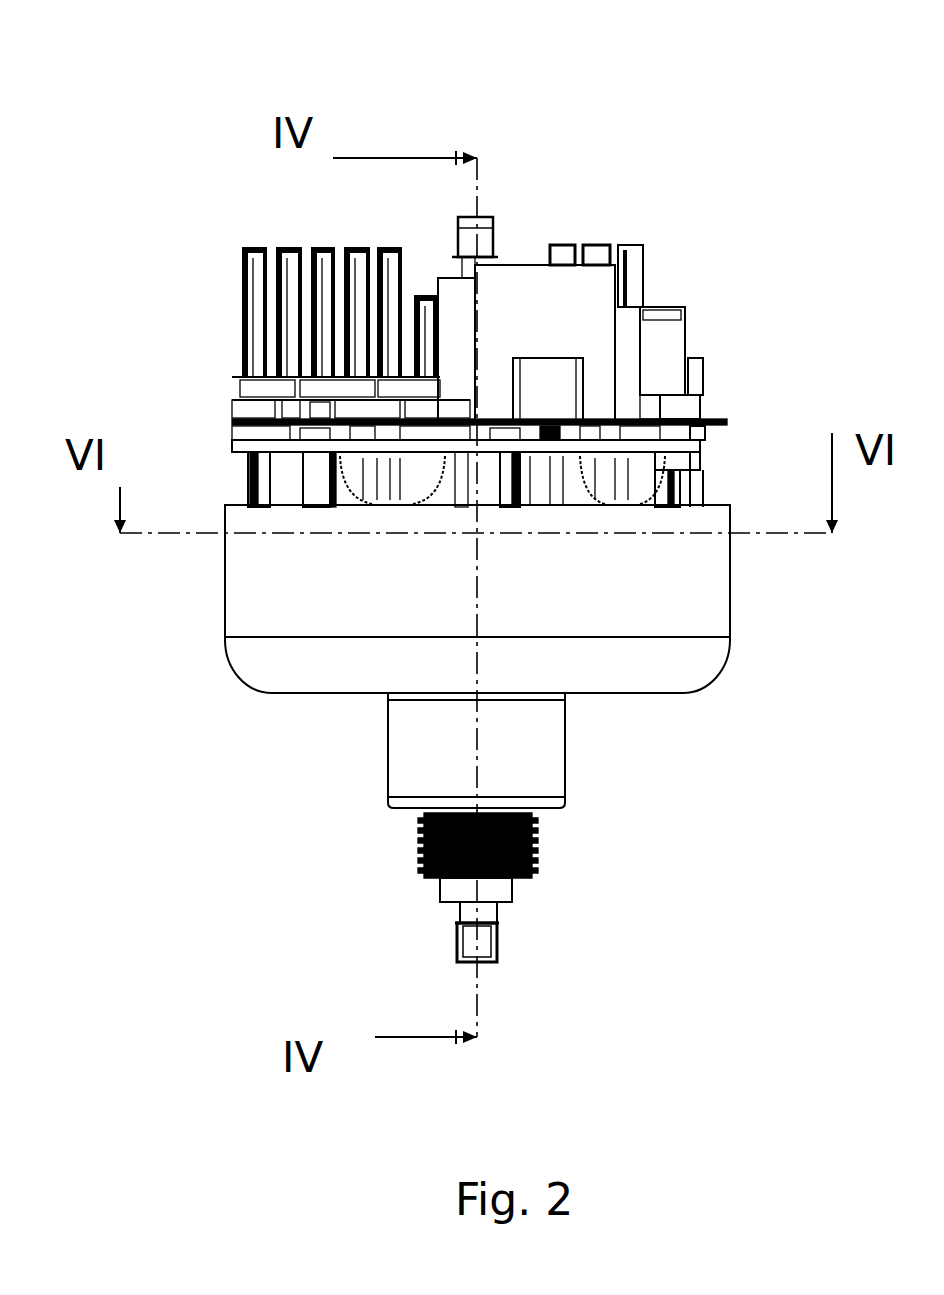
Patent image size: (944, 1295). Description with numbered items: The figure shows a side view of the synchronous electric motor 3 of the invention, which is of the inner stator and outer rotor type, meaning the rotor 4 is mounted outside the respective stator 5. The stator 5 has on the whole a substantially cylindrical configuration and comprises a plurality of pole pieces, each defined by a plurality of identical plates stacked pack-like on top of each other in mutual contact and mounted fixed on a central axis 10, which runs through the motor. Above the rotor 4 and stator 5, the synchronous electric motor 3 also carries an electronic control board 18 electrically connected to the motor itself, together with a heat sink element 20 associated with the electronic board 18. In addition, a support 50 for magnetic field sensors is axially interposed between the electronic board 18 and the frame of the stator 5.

The synchronous electric motor 3 is at (680, 210).
The rotor 4 is at (638, 653).
The stator 5 is at (665, 488).
The central axis 10 is at (492, 930).
The electronic control board 18 is at (602, 450).
The heat sink element 20 is at (260, 360).
The support for magnetic field sensors 50 is at (680, 413).